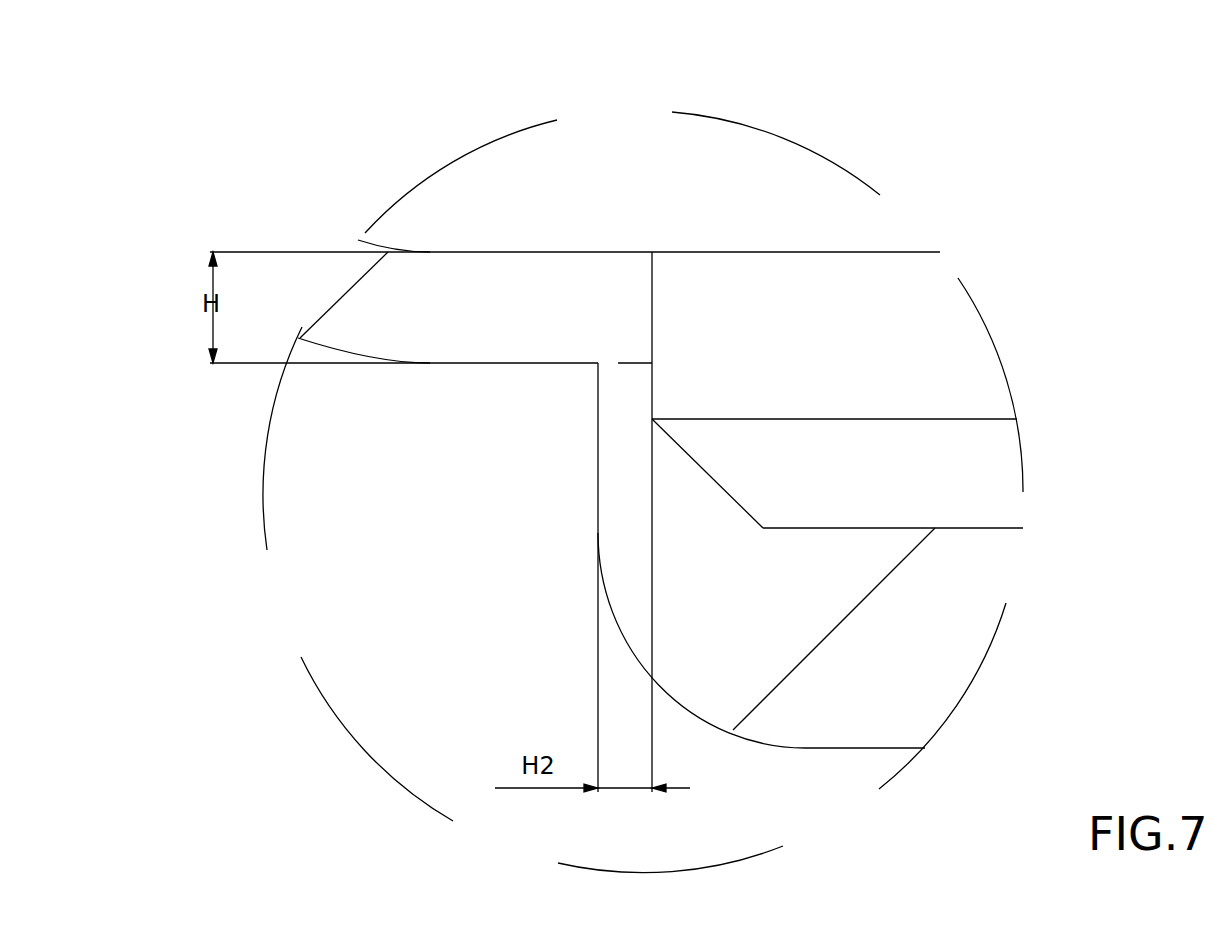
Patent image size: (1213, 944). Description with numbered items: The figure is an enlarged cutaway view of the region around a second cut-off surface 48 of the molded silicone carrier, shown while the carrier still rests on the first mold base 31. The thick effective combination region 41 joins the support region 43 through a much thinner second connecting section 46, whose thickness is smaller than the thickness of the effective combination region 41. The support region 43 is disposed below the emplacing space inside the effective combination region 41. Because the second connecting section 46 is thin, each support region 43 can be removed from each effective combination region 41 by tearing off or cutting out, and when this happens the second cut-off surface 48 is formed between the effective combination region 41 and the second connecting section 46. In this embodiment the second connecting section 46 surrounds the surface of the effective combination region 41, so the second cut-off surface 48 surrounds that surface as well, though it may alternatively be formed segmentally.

The first mold base 31 is at (372, 722).
The effective combination region 41 is at (495, 297).
The support region 43 is at (963, 658).
The second connecting section 46 is at (652, 393).
The second cut-off surface 48 is at (627, 363).